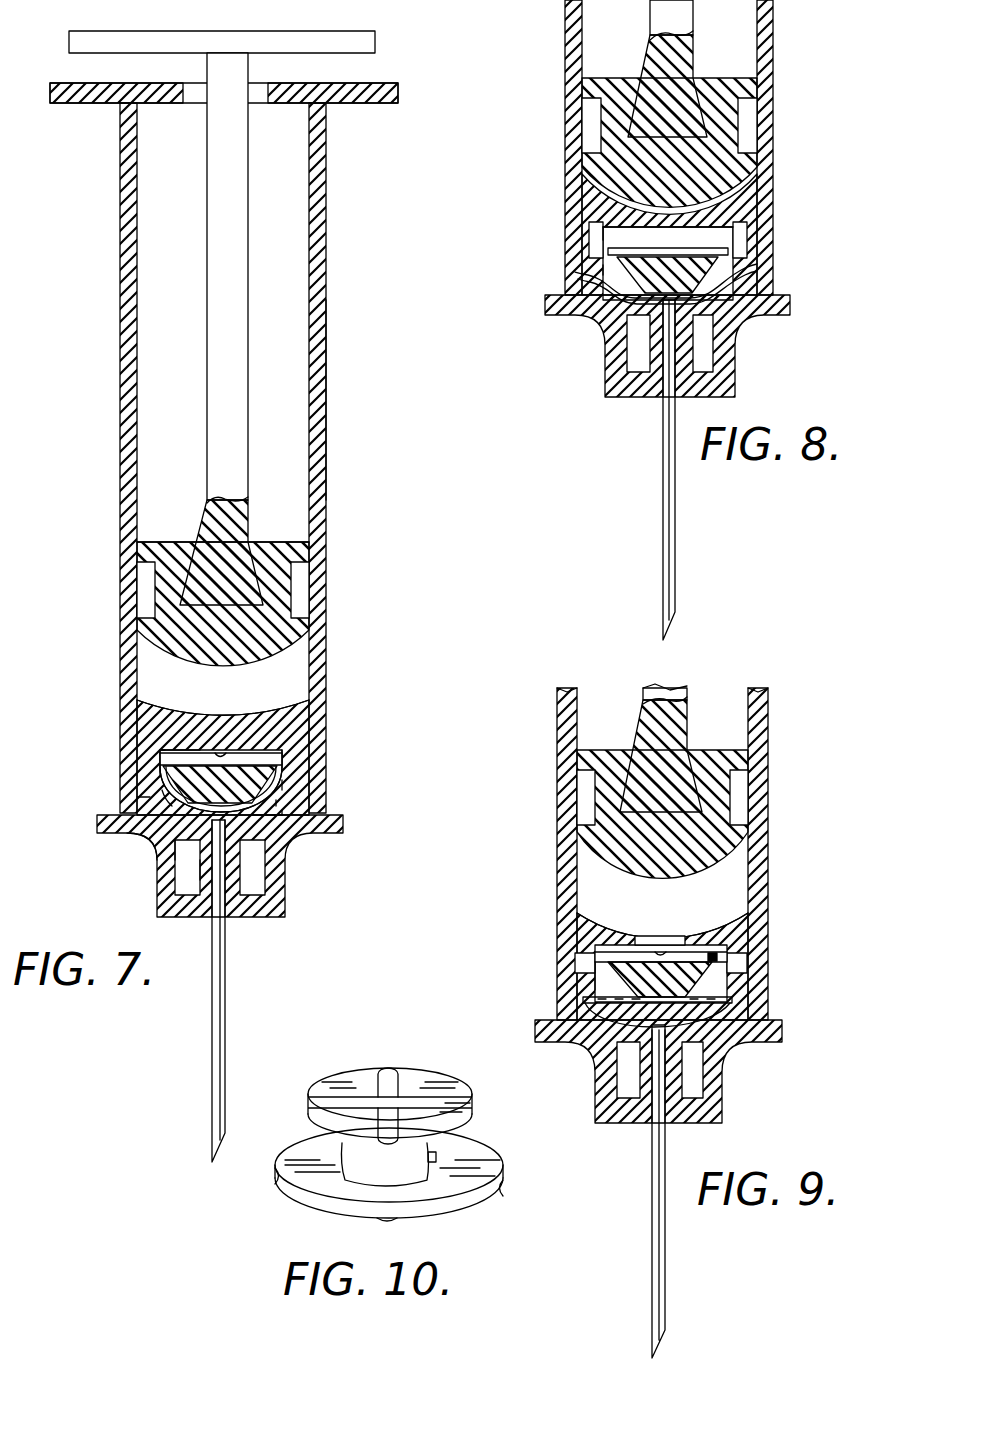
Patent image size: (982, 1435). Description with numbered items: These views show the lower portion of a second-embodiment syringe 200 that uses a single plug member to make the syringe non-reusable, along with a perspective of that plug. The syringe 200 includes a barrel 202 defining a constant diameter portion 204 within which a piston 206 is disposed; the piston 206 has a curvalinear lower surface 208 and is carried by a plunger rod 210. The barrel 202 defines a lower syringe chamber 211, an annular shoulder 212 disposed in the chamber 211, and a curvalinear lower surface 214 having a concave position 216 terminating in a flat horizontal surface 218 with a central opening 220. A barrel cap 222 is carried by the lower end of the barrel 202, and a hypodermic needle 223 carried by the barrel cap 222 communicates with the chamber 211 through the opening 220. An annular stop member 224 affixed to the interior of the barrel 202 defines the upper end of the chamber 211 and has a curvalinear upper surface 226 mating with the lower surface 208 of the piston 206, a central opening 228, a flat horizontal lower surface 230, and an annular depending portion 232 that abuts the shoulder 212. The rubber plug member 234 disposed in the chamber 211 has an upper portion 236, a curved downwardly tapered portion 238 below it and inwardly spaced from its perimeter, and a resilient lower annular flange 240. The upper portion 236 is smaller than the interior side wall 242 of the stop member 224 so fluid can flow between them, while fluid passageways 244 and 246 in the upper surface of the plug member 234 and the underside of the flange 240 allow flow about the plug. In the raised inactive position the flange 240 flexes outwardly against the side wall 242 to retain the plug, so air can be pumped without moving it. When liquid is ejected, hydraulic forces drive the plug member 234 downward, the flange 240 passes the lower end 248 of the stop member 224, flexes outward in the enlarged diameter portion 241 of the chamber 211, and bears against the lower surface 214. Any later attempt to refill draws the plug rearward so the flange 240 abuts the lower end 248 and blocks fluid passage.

In FIG. 7, the syringe 200 is at (400, 222).
In FIG. 7, the barrel 202 is at (330, 662).
In FIG. 8, the barrel 202 is at (775, 70).
In FIG. 9, the barrel 202 is at (768, 888).
In FIG. 7, the constant diameter portion 204 is at (328, 492).
In FIG. 7, the piston 206 is at (272, 637).
In FIG. 8, the piston 206 is at (720, 178).
In FIG. 9, the piston 206 is at (730, 852).
In FIG. 7, the curvalinear lower surface 208 is at (200, 673).
In FIG. 9, the curvalinear lower surface 208 is at (662, 925).
In FIG. 7, the plunger rod 210 is at (233, 410).
In FIG. 8, the plunger rod 210 is at (667, 68).
In FIG. 9, the plunger rod 210 is at (661, 748).
In FIG. 7, the lower syringe chamber 211 is at (270, 815).
In FIG. 7, the annular shoulder 212 is at (150, 797).
In FIG. 7, the curvalinear lower surface 214 is at (148, 835).
In FIG. 7, the concave position 216 is at (165, 850).
In FIG. 7, the flat horizontal surface 218 is at (185, 865).
In FIG. 7, the central opening 220 is at (268, 820).
In FIG. 7, the barrel cap 222 is at (287, 890).
In FIG. 8, the barrel cap 222 is at (735, 365).
In FIG. 9, the barrel cap 222 is at (722, 1105).
In FIG. 7, the hypodermic needle 223 is at (225, 1030).
In FIG. 8, the hypodermic needle 223 is at (669, 470).
In FIG. 9, the hypodermic needle 223 is at (670, 1292).
In FIG. 7, the annular stop member 224 is at (283, 750).
In FIG. 8, the annular stop member 224 is at (748, 228).
In FIG. 9, the annular stop member 224 is at (755, 950).
In FIG. 7, the curvalinear upper surface 226 is at (280, 722).
In FIG. 7, the central opening 228 is at (217, 703).
In FIG. 7, the flat horizontal lower surface 230 is at (257, 747).
In FIG. 8, the flat horizontal lower surface 230 is at (603, 235).
In FIG. 7, the annular depending portion 232 is at (160, 770).
In FIG. 7, the plug member 234 is at (283, 760).
In FIG. 8, the plug member 234 is at (705, 245).
In FIG. 9, the plug member 234 is at (703, 945).
In FIG. 10, the plug member 234 is at (430, 1085).
In FIG. 7, the upper portion 236 is at (277, 775).
In FIG. 8, the upper portion 236 is at (740, 262).
In FIG. 9, the upper portion 236 is at (610, 975).
In FIG. 10, the upper portion 236 is at (432, 1150).
In FIG. 8, the curved downwardly tapered portion 238 is at (600, 272).
In FIG. 9, the curved downwardly tapered portion 238 is at (730, 968).
In FIG. 10, the curved downwardly tapered portion 238 is at (438, 1156).
In FIG. 7, the resilient lower annular flange 240 is at (275, 805).
In FIG. 8, the resilient lower annular flange 240 is at (760, 275).
In FIG. 9, the resilient lower annular flange 240 is at (745, 995).
In FIG. 10, the resilient lower annular flange 240 is at (500, 1170).
In FIG. 7, the enlarged diameter portion 241 is at (280, 812).
In FIG. 7, the interior side wall 242 is at (160, 750).
In FIG. 9, the fluid passageway 244 is at (720, 957).
In FIG. 10, the fluid passageway 244 is at (385, 1070).
In FIG. 7, the fluid passageway 246 is at (160, 803).
In FIG. 9, the fluid passageway 246 is at (735, 1003).
In FIG. 10, the fluid passageway 246 is at (270, 1175).
In FIG. 7, the lower end 248 is at (285, 790).